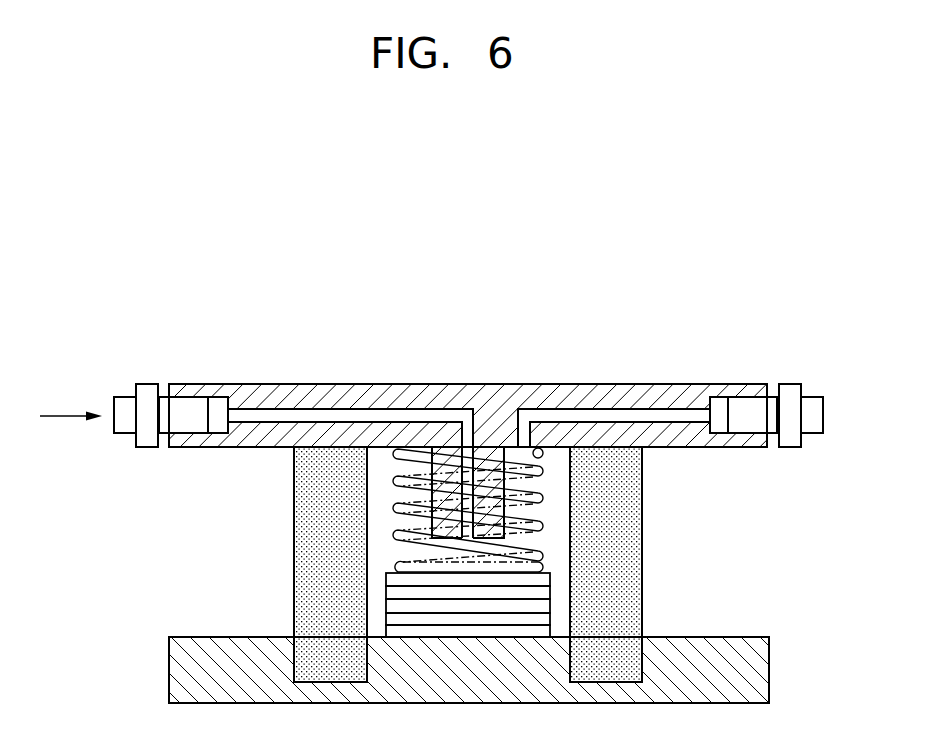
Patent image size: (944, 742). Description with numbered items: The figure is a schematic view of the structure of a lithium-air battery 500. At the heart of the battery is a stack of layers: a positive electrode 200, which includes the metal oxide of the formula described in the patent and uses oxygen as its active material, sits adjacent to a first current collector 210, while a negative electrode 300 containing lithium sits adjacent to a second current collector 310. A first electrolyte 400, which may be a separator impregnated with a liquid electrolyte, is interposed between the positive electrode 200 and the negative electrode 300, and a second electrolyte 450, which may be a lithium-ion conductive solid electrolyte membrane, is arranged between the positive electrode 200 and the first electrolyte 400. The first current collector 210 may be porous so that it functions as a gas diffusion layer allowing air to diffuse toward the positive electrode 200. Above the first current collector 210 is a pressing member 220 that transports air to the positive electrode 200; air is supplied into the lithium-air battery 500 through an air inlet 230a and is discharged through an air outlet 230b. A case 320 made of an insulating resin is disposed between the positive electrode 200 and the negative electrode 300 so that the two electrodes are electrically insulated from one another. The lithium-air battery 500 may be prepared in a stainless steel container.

The lithium-air battery 500 is at (150, 332).
The air inlet 230a is at (125, 428).
The air outlet 230b is at (812, 430).
The pressing member 220 is at (543, 499).
The case 320 is at (300, 550).
The second current collector 310 is at (178, 671).
The first current collector 210 is at (548, 578).
The positive electrode 200 is at (548, 592).
The second electrolyte 450 is at (548, 605).
The first electrolyte 400 is at (548, 618).
The negative electrode 300 is at (548, 631).